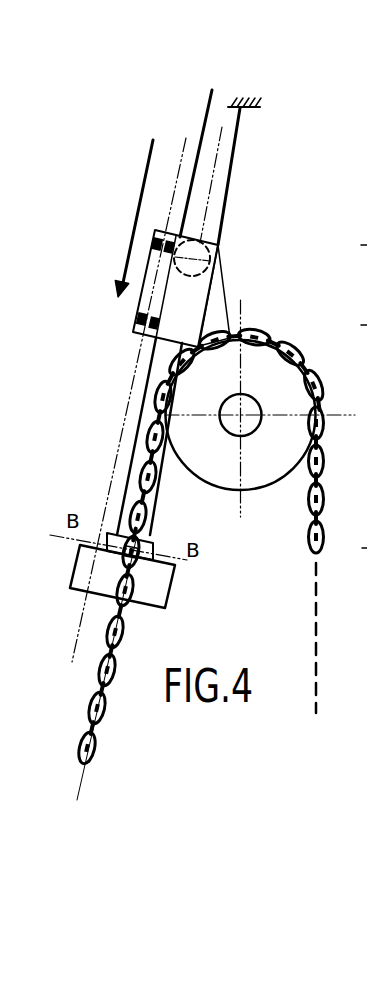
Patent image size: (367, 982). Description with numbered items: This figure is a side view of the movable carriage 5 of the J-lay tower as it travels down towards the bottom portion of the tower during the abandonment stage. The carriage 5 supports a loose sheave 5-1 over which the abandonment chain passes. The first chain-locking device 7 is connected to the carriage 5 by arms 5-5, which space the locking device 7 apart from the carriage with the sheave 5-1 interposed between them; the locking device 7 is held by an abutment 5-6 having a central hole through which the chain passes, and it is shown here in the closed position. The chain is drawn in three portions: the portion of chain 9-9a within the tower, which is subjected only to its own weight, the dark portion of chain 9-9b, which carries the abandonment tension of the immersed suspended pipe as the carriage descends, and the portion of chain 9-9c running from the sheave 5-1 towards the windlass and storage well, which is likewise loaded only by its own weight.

The movable carriage 5 is at (183, 303).
The loose sheave 5-1 is at (267, 368).
The arms 5-5 is at (160, 352).
The abutment 5-6 is at (160, 597).
The first chain-locking device 7 is at (153, 545).
The portion of chain subjected to its own weight only 9-9a is at (142, 478).
The portion of chain subjected to abandonment tension 9-9b is at (95, 755).
The portion of chain between sheave and windlass 9-9c is at (308, 503).